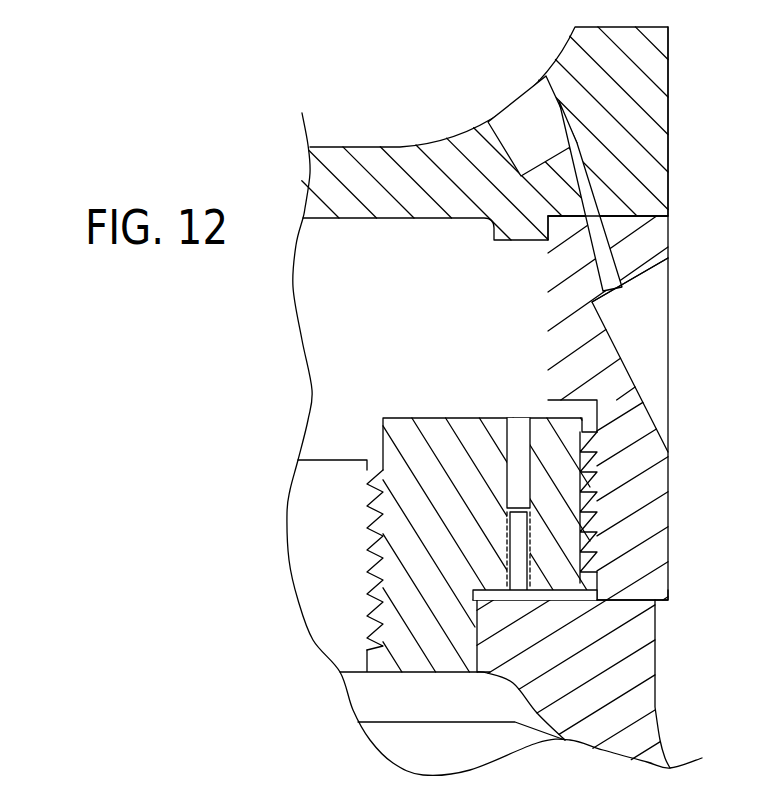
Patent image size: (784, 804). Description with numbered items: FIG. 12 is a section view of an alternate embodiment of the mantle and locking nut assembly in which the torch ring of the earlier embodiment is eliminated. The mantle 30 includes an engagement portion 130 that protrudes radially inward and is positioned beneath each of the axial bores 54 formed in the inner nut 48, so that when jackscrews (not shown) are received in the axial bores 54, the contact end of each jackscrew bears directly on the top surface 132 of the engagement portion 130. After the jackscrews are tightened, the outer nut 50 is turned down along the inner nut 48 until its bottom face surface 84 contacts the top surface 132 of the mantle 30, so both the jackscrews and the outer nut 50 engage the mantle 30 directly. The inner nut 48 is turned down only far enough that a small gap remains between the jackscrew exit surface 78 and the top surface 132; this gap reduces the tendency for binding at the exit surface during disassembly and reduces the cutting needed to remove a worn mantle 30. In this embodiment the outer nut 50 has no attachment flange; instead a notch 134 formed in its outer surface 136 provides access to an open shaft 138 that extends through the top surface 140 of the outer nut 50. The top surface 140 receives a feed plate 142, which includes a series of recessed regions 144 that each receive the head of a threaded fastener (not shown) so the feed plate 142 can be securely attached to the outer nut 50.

The mantle 30 is at (637, 737).
The inner nut 48 is at (412, 443).
The outer nut 50 is at (640, 467).
The axial bores 54 is at (515, 443).
The jackscrew exit surface 78 is at (537, 597).
The bottom face surface 84 is at (660, 603).
The engagement portion 130 is at (567, 655).
The top surface 132 is at (493, 590).
The notch 134 is at (648, 337).
The outer surface 136 is at (668, 240).
The open shaft 138 is at (600, 263).
The top surface 140 is at (645, 216).
The feed plate 142 is at (578, 58).
The recessed regions 144 is at (500, 127).